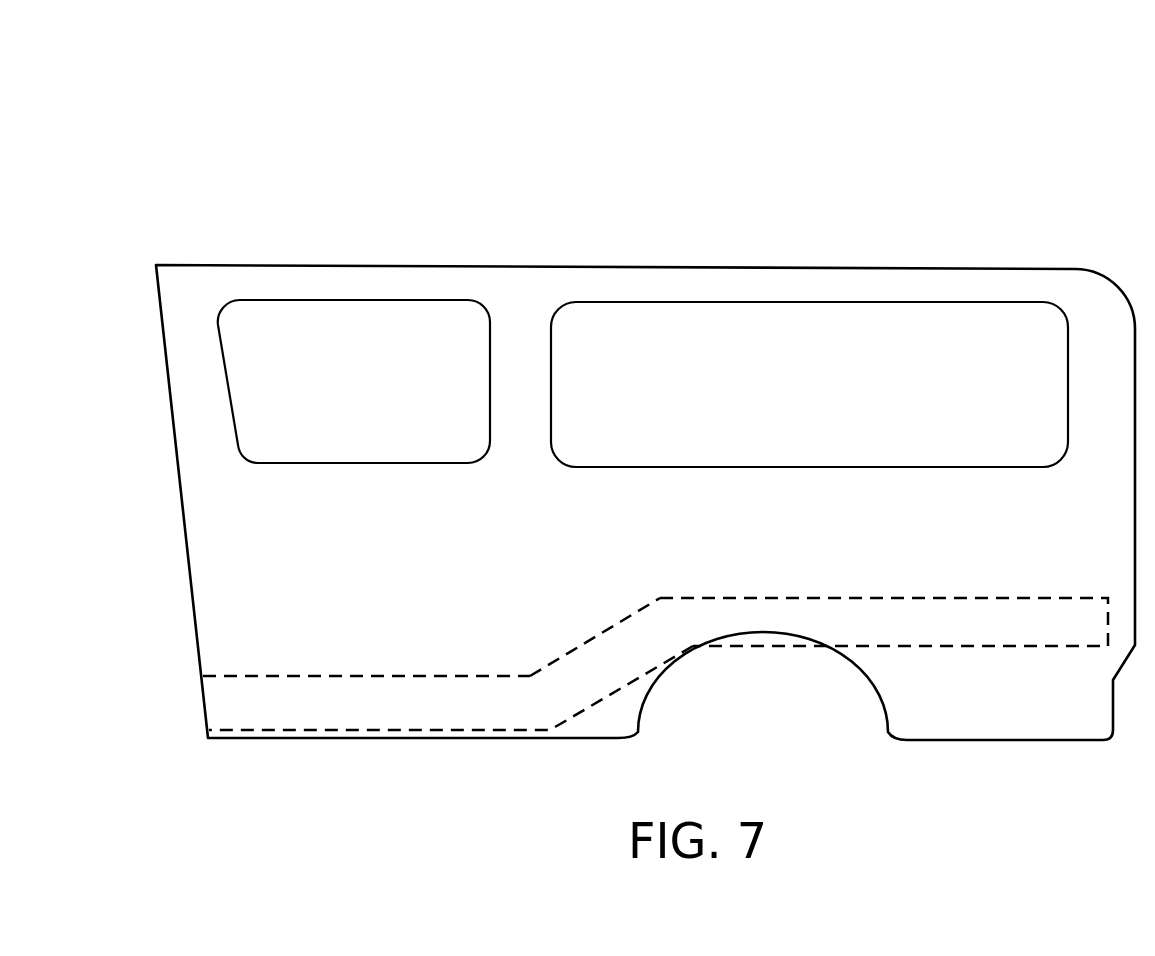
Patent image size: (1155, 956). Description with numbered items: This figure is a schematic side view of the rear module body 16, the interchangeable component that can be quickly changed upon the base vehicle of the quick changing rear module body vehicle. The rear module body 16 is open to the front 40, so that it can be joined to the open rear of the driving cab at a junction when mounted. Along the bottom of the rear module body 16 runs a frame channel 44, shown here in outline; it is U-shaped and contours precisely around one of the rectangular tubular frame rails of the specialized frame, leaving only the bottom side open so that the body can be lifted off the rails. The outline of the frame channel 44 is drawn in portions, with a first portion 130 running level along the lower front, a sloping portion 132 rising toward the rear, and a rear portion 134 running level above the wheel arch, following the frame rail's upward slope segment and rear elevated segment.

The rear module body 16 is at (120, 140).
The front 40 is at (623, 502).
The frame channel 44 is at (655, 627).
The first portion of stripe region 130 is at (366, 645).
The second portion of stripe region 132 is at (451, 665).
The third portion of stripe region 134 is at (884, 592).